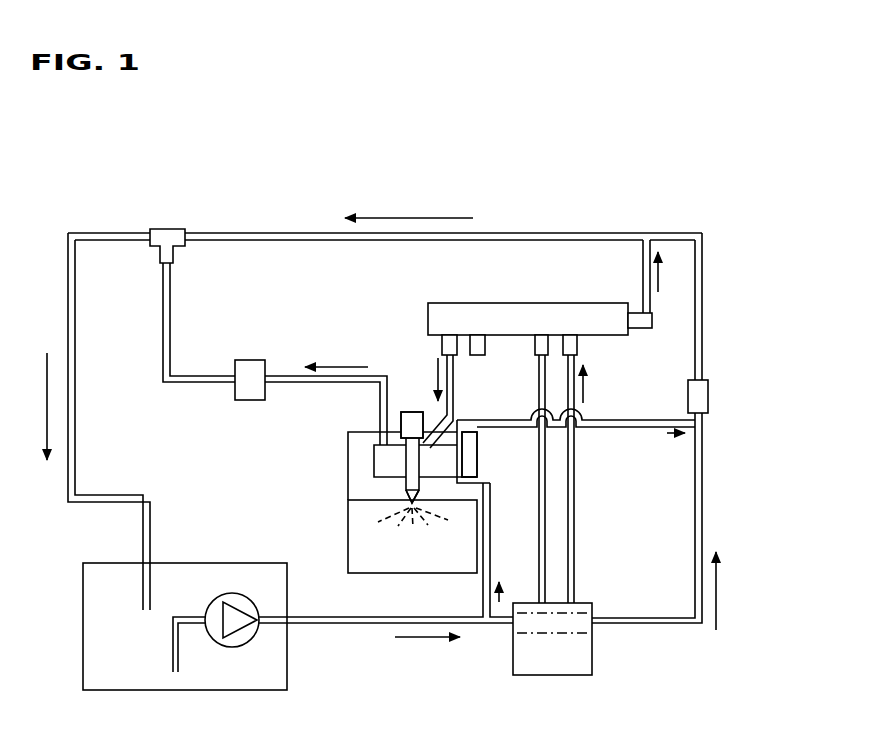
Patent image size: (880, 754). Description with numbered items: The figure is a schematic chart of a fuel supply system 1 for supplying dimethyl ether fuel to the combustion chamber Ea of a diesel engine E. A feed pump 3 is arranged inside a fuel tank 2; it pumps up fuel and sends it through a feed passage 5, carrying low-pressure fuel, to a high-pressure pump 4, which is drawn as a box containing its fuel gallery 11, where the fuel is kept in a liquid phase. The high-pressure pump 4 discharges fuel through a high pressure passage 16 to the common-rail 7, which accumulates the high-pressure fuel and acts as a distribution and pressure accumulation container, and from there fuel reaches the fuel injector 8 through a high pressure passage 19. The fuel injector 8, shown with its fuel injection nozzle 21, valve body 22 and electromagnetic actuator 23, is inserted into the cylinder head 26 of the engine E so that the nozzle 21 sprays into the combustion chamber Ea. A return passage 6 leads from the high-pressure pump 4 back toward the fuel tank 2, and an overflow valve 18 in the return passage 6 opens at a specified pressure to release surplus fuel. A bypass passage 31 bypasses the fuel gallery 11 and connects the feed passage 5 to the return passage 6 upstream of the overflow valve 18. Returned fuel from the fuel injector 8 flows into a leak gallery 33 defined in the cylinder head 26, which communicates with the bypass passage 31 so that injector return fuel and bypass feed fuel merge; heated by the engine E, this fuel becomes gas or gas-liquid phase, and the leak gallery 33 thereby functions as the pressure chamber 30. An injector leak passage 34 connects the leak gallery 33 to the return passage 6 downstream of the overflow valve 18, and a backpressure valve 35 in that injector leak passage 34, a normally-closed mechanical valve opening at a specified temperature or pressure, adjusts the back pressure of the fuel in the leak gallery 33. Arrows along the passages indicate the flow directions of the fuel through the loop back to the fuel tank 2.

The fuel supply system 1 is at (680, 135).
The fuel tank 2 is at (83, 670).
The feed pump 3 is at (244, 640).
The high-pressure pump 4 is at (535, 662).
The feed passage 5 is at (325, 624).
The return passage 6 is at (703, 510).
The common-rail 7 is at (572, 313).
The fuel injector 8 is at (404, 408).
The fuel gallery 11 is at (582, 636).
The high pressure passage 16 is at (575, 506).
The overflow valve 18 is at (708, 394).
The high pressure passage 19 is at (453, 377).
The fuel injection nozzle 21 is at (405, 502).
The valve body 22 is at (405, 452).
The electromagnetic actuator 23 is at (415, 412).
The cylinder head 26 is at (358, 465).
The pressure chamber 30 is at (501, 460).
The bypass passage 31 is at (618, 430).
The leak gallery 33 is at (470, 457).
The injector leak passage 34 is at (212, 378).
The backpressure valve 35 is at (262, 368).
The engine E is at (345, 517).
The combustion chamber Ea is at (377, 538).